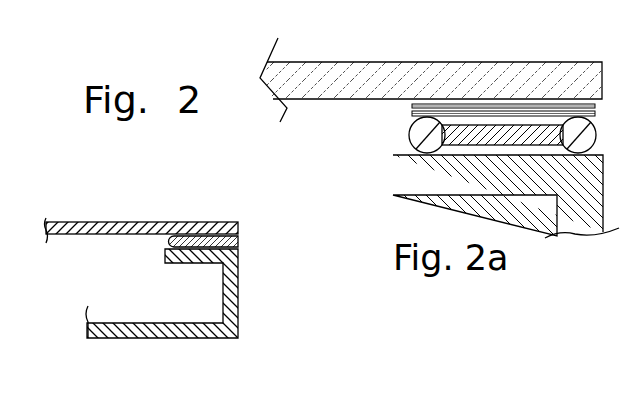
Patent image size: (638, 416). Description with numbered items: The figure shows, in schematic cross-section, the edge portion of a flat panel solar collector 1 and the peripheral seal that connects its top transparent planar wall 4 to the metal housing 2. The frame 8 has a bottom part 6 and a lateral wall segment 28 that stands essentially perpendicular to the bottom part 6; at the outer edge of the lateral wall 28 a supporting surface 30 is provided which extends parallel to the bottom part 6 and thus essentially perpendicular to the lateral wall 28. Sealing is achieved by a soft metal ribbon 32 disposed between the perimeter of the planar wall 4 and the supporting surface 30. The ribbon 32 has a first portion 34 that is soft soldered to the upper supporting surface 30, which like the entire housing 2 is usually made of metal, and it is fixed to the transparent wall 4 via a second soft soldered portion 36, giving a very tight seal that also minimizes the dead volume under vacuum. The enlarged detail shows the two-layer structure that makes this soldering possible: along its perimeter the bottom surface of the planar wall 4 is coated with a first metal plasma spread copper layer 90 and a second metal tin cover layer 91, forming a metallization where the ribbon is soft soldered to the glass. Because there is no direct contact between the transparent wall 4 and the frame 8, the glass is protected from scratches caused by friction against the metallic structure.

In FIG. 2, the flat panel solar collector 1 is at (63, 200).
In FIG. 2A, the flat panel solar collector 1 is at (631, 159).
In FIG. 2, the housing 2 is at (145, 342).
In FIG. 2, the transparent planar wall 4 is at (110, 222).
In FIG. 2A, the transparent planar wall 4 is at (330, 72).
In FIG. 2, the bottom part 6 is at (187, 327).
In FIG. 2, the frame 8 is at (230, 300).
In FIG. 2, the lateral wall segment 28 is at (237, 268).
In FIG. 2A, the lateral wall segment 28 is at (586, 210).
In FIG. 2, the supporting surface 30 is at (166, 254).
In FIG. 2A, the supporting surface 30 is at (400, 178).
In FIG. 2, the soft metal ribbon 32 is at (203, 243).
In FIG. 2A, the soft metal ribbon 32 is at (507, 133).
In FIG. 2, the first portion 34 is at (173, 242).
In FIG. 2A, the first portion 34 is at (424, 130).
In FIG. 2, the second soft soldered portion 36 is at (238, 237).
In FIG. 2A, the second soft soldered portion 36 is at (588, 130).
In FIG. 2A, the first metal plasma spread copper layer 90 is at (542, 107).
In FIG. 2A, the second metal tin cover layer 91 is at (412, 112).